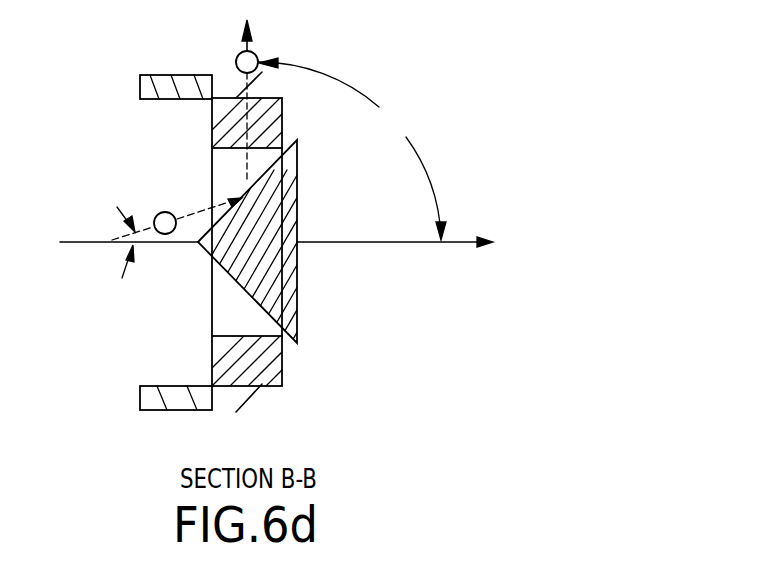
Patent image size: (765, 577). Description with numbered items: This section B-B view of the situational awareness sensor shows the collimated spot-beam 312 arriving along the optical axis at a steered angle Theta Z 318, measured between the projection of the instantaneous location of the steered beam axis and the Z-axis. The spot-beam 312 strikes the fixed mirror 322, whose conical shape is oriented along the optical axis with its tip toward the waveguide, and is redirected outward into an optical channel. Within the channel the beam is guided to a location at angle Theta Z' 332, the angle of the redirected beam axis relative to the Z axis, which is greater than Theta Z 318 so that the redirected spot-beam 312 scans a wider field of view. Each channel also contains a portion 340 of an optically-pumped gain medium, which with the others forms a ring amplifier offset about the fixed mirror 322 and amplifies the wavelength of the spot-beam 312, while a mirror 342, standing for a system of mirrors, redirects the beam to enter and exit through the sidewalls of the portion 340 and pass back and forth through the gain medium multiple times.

The collimated spot-beam 312 is at (163, 212).
The Theta Z 318 is at (125, 225).
The fixed mirror 322 is at (228, 292).
The Theta Z' 332 is at (426, 158).
The portion of optically-pumped gain medium 340 is at (140, 88).
The mirror 342 is at (262, 72).